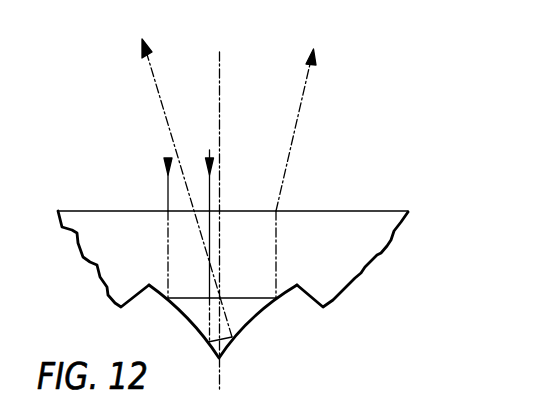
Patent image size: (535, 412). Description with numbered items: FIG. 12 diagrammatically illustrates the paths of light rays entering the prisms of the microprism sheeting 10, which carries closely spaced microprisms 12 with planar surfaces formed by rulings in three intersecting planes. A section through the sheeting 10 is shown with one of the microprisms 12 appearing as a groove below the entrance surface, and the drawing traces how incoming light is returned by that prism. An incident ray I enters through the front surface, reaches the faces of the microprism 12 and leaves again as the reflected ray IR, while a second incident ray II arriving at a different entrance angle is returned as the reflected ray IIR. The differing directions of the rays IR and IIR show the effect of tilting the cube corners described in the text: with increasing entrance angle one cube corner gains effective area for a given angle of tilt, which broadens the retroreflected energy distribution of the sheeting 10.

The microprism sheeting 10 is at (384, 250).
The microprisms 12 is at (256, 316).
The incident ray I is at (208, 133).
The reflected ray I_R IR is at (115, 19).
The incident ray II is at (153, 171).
The reflected ray II_R IIR is at (327, 30).